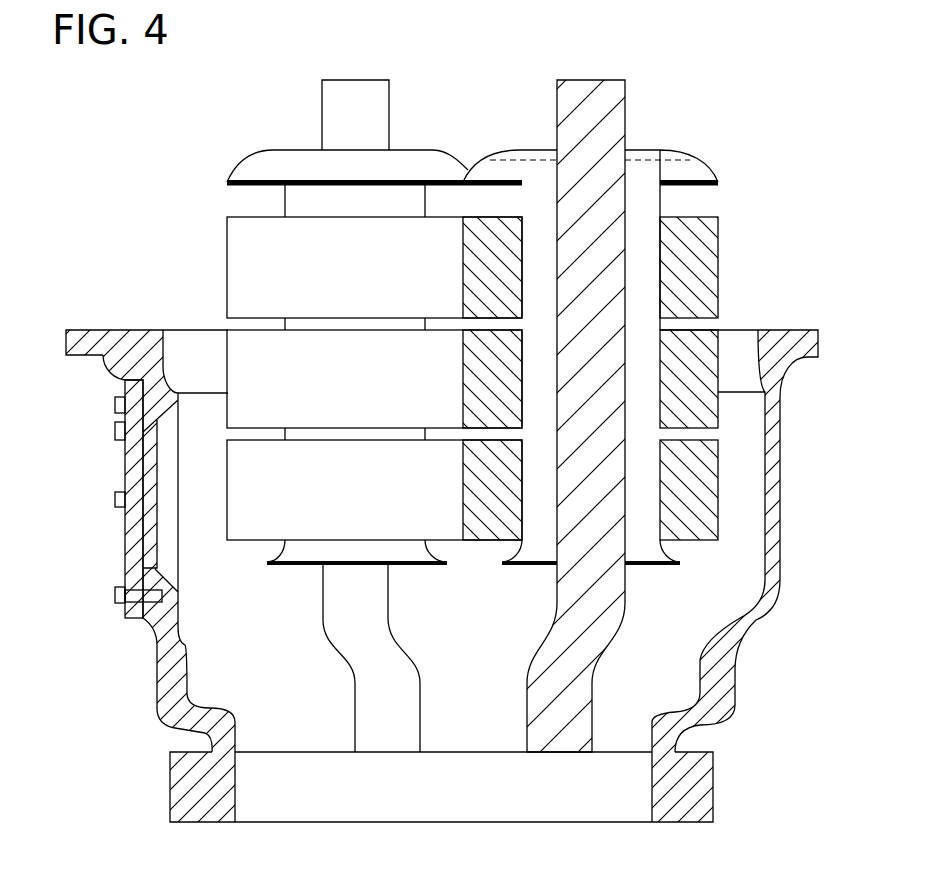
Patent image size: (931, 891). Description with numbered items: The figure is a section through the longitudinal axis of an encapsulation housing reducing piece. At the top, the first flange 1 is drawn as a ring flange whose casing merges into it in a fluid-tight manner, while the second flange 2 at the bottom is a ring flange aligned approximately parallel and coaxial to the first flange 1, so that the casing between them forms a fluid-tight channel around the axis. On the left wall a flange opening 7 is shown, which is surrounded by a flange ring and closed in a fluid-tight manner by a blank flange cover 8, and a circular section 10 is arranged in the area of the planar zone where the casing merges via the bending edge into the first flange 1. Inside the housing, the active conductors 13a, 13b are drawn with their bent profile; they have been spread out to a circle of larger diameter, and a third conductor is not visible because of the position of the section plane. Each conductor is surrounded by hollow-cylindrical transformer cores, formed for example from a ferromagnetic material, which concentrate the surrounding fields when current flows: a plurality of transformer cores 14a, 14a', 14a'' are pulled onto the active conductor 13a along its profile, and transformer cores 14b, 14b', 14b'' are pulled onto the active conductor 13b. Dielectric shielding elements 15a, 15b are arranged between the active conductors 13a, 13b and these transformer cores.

The first flange 1 is at (817, 347).
The second flange 2 is at (715, 788).
The flange opening 7 is at (150, 435).
The blank flange cover 8 is at (135, 548).
The circular section 10 is at (105, 362).
The active conductor 13a is at (570, 740).
The active conductor 13b is at (390, 738).
The transformer core 14a is at (748, 490).
The transformer core 14a' is at (722, 361).
The transformer core 14a'' is at (724, 267).
The transformer core 14b is at (452, 525).
The transformer core 14b' is at (338, 368).
The transformer core 14b'' is at (338, 273).
The dielectric shielding element 15a is at (253, 155).
The dielectric shielding element 15b is at (702, 187).